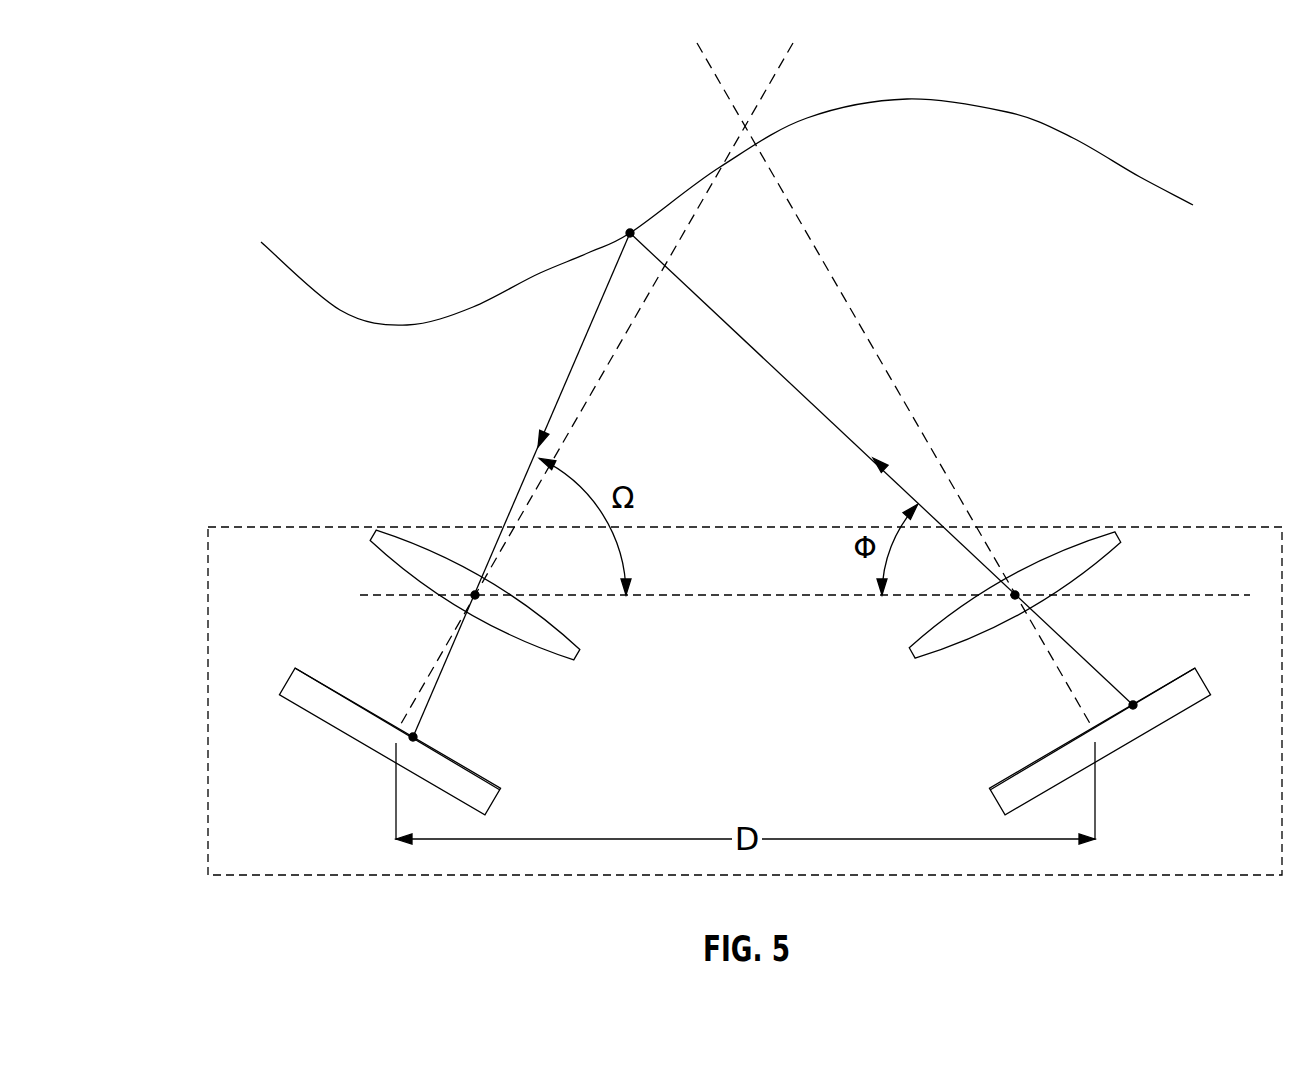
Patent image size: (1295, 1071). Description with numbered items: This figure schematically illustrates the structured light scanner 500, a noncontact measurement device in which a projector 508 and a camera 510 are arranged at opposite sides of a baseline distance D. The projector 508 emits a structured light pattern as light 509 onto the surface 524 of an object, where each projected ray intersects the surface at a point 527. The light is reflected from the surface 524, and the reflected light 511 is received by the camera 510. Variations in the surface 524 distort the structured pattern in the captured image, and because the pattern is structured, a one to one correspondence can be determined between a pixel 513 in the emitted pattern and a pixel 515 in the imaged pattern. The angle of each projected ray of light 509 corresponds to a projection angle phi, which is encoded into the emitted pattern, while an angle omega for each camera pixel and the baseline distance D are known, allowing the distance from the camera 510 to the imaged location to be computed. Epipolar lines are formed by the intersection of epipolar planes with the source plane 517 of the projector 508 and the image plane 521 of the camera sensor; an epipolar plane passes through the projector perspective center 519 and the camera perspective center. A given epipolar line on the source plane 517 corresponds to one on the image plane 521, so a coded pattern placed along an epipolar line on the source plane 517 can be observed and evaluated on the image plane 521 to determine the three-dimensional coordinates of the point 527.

The structured light scanner 500 is at (260, 524).
The surface 524 is at (1143, 179).
The point 527 is at (630, 230).
The reflected light 511 is at (563, 393).
The light 509 is at (790, 387).
The projector perspective center 519 is at (1007, 587).
The camera 510 is at (353, 738).
The image plane 521 is at (330, 687).
The pixel 515 is at (415, 736).
The projector 508 is at (1137, 740).
The source plane 517 is at (1040, 760).
The pixel 513 is at (1135, 704).